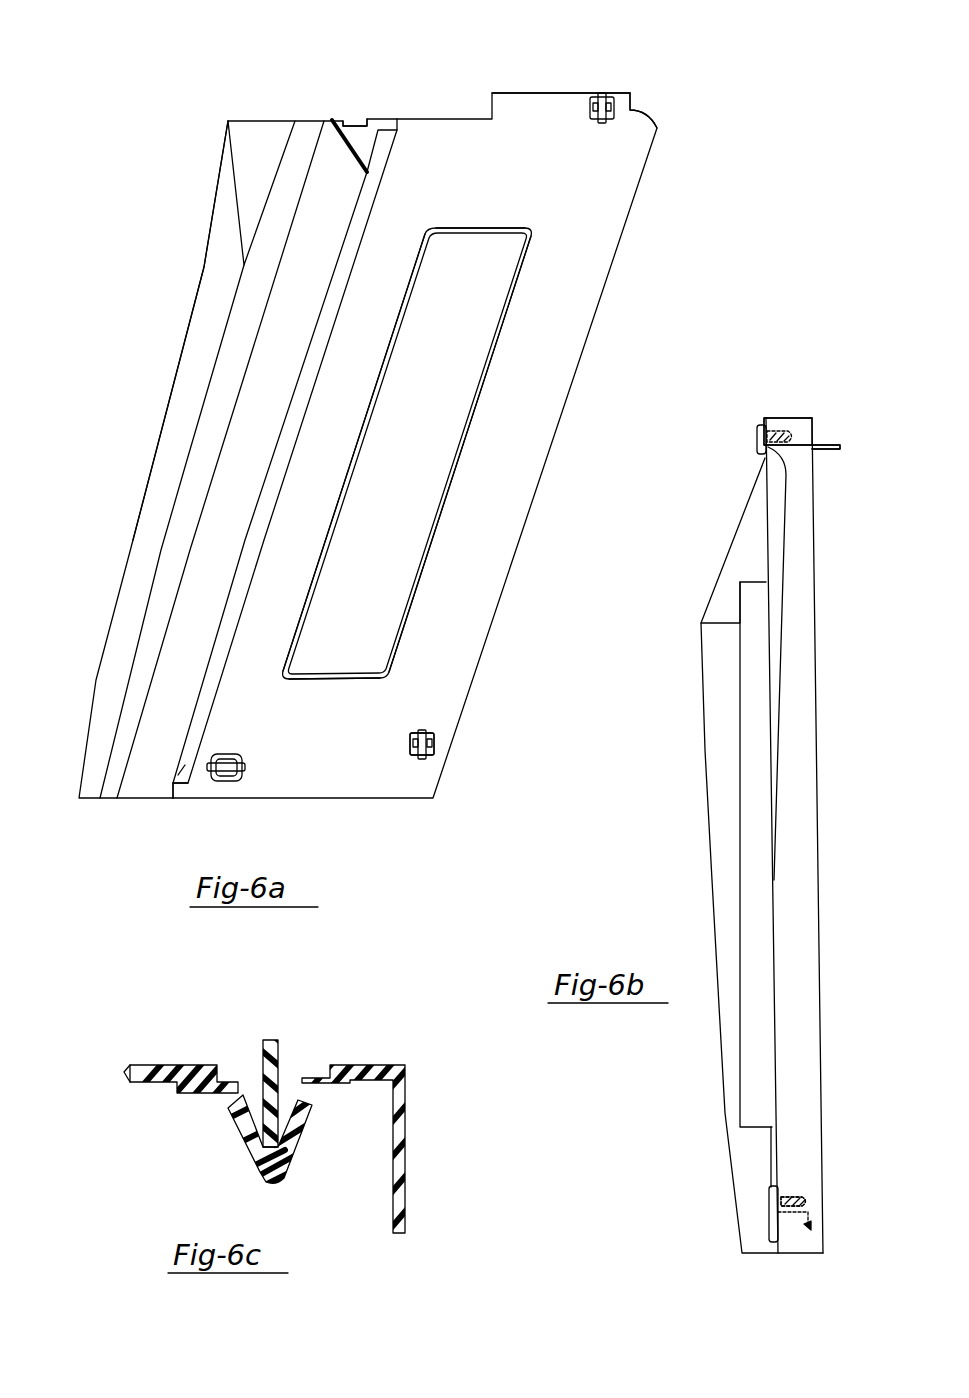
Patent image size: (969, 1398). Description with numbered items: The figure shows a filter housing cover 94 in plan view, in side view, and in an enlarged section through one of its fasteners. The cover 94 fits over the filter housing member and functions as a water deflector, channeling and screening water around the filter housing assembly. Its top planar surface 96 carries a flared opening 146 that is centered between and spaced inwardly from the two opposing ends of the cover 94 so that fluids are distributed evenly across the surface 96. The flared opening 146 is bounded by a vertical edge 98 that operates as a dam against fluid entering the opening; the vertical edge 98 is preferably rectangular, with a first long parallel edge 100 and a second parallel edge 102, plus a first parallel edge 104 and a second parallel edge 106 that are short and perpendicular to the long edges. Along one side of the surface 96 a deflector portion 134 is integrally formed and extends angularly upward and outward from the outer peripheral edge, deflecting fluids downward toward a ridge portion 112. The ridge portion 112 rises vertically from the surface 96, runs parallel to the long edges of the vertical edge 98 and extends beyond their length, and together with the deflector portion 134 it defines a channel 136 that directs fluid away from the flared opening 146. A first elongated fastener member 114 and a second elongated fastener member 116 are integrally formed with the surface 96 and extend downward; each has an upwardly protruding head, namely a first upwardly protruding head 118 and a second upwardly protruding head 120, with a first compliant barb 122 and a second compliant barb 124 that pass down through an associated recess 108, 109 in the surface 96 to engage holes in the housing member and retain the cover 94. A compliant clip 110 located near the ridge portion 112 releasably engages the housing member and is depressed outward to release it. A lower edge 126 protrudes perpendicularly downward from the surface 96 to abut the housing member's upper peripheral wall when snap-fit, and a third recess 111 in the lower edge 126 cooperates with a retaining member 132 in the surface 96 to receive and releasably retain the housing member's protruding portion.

In FIG. 6A, the filter housing cover 94 is at (516, 82).
In FIG. 6B, the filter housing cover 94 is at (784, 356).
In FIG. 6A, the top planar surface 96 is at (462, 600).
In FIG. 6A, the vertical edge 98 is at (452, 512).
In FIG. 6B, the vertical edge 98 is at (750, 1062).
In FIG. 6A, the first long parallel edge 100 is at (400, 620).
In FIG. 6A, the second parallel edge 102 is at (353, 468).
In FIG. 6A, the first parallel edge 104 is at (485, 228).
In FIG. 6A, the second parallel edge 106 is at (318, 680).
In FIG. 6A, the recess 108 is at (612, 102).
In FIG. 6A, the recess 109 is at (434, 730).
In FIG. 6A, the compliant clip 110 is at (227, 782).
In FIG. 6B, the compliant clip 110 is at (799, 1224).
In FIG. 6A, the third recess 111 is at (362, 118).
In FIG. 6A, the ridge portion 112 is at (175, 782).
In FIG. 6A, the first elongated fastener member 114 is at (606, 96).
In FIG. 6B, the first elongated fastener member 114 is at (757, 430).
In FIG. 6C, the first elongated fastener member 114 is at (274, 1107).
In FIG. 6A, the second elongated fastener member 116 is at (434, 758).
In FIG. 6B, the second elongated fastener member 116 is at (796, 1196).
In FIG. 6C, the second elongated fastener member 116 is at (274, 1107).
In FIG. 6B, the first upwardly protruding head 118 is at (758, 435).
In FIG. 6C, the first upwardly protruding head 118 is at (315, 1047).
In FIG. 6B, the second upwardly protruding head 120 is at (776, 1199).
In FIG. 6C, the second upwardly protruding head 120 is at (270, 1040).
In FIG. 6B, the first compliant barb 122 is at (795, 433).
In FIG. 6C, the first compliant barb 122 is at (207, 1146).
In FIG. 6B, the second compliant barb 124 is at (808, 1202).
In FIG. 6C, the second compliant barb 124 is at (268, 1157).
In FIG. 6A, the lower edge 126 is at (388, 118).
In FIG. 6B, the lower edge 126 is at (803, 418).
In FIG. 6A, the retaining member 132 is at (346, 122).
In FIG. 6A, the deflector portion 134 is at (135, 565).
In FIG. 6A, the channel 136 is at (148, 758).
In FIG. 6A, the flared opening 146 is at (429, 428).